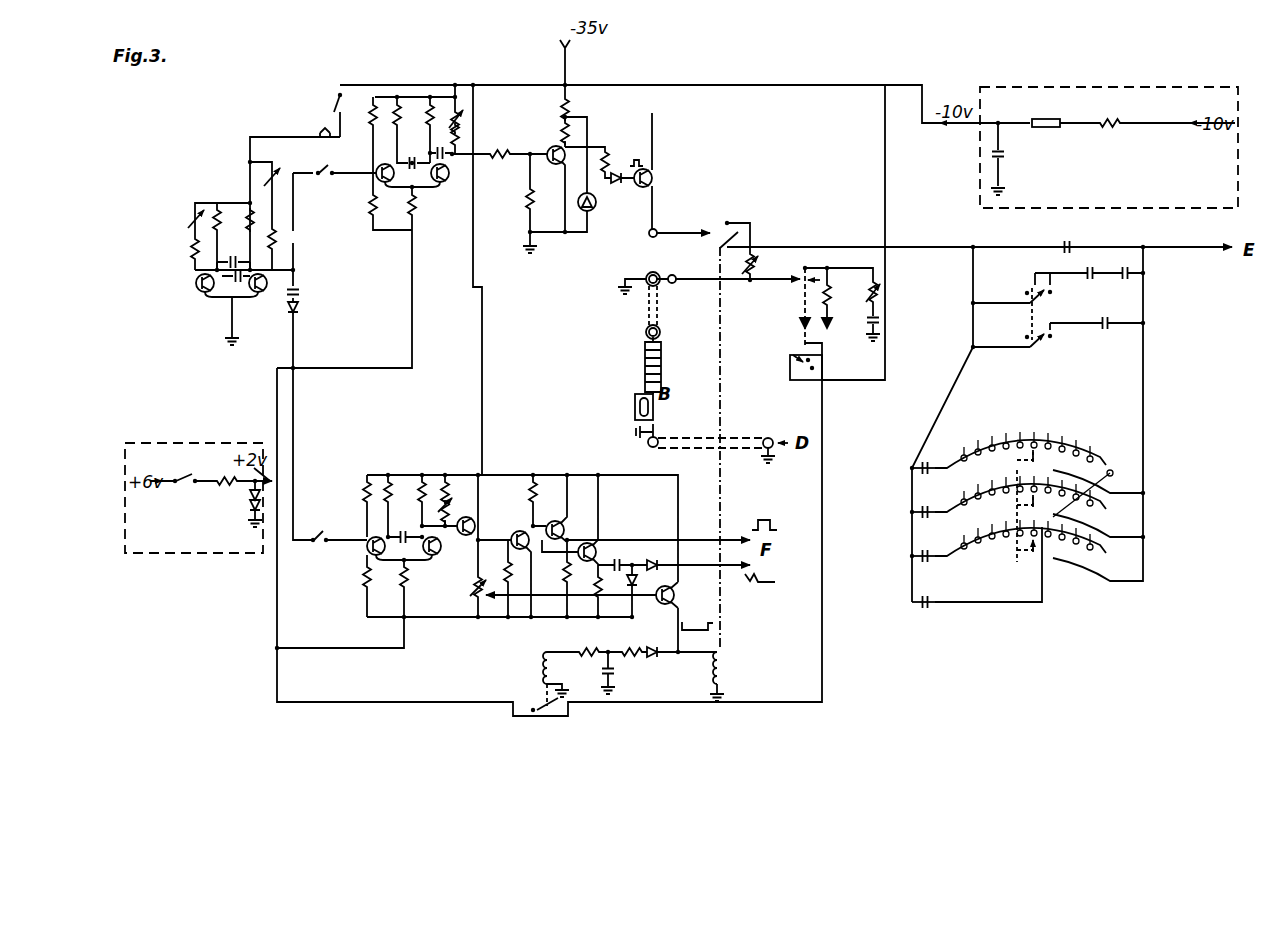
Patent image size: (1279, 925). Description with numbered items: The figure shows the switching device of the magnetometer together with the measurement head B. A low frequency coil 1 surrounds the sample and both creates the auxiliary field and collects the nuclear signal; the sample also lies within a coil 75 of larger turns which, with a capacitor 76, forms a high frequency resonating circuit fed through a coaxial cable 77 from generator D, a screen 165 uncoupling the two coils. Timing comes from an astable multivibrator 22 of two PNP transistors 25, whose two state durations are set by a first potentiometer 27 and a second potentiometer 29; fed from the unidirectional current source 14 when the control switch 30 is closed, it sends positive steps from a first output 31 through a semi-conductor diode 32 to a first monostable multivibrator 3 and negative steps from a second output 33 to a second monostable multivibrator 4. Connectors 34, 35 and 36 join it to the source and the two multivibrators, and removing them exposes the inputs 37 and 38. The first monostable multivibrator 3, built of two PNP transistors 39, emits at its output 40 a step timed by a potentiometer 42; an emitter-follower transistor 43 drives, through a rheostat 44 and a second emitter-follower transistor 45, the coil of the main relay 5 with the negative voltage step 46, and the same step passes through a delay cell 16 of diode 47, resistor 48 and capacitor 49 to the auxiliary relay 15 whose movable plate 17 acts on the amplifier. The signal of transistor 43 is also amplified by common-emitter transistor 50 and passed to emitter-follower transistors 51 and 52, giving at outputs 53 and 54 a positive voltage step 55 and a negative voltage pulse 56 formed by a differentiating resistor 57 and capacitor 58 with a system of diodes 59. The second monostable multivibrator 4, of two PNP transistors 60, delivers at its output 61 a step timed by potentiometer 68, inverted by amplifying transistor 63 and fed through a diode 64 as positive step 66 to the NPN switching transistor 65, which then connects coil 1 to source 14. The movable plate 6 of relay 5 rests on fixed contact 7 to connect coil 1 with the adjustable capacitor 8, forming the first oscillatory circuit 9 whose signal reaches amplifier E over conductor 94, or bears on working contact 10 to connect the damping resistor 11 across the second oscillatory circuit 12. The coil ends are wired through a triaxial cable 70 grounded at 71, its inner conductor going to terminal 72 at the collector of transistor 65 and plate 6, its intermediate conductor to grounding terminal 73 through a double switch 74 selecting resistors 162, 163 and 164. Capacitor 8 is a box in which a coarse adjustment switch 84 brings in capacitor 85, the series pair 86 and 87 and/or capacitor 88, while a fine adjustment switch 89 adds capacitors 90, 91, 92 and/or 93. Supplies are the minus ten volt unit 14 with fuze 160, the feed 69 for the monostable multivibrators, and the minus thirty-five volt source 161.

The low frequency coil 1 is at (640, 366).
The first monostable multivibrator 3 is at (404, 545).
The second monostable multivibrator 4 is at (412, 175).
The main relay 5 is at (724, 662).
The movable plate 6 is at (684, 273).
The fixed contact of rest 7 is at (729, 240).
The adjustable capacitor 8 is at (1075, 388).
The first oscillatory circuit 9 is at (937, 292).
The working fixed contact 10 is at (730, 222).
The adjustable damping resistor 11 is at (756, 266).
The second oscillatory circuit 12 is at (697, 274).
The unidirectional current source 14 is at (1104, 86).
The auxiliary relay 15 is at (540, 666).
The delay cell 16 is at (632, 656).
The movable plate 17 is at (530, 704).
The astable multivibrator 22 is at (231, 297).
The PNP transistors 25 is at (202, 294).
The first potentiometer 27 is at (196, 216).
The second potentiometer 29 is at (278, 170).
The control switch 30 is at (337, 104).
The first output 31 is at (312, 542).
The semi-conductor diode 32 is at (300, 307).
The second output 33 is at (319, 176).
The connector 34 is at (327, 132).
The connector 35 is at (315, 530).
The connector 36 is at (331, 170).
The input 37 is at (330, 542).
The input 38 is at (335, 176).
The PNP transistors 39 is at (376, 562).
The output 40 is at (440, 522).
The potentiometer 42 is at (449, 519).
The PNP transistor 43 is at (466, 535).
The rheostat 44 is at (471, 592).
The PNP transistor 45 is at (661, 604).
The voltage step 46 is at (700, 613).
The diode 47 is at (651, 658).
The resistor 48 is at (628, 650).
The capacitor 49 is at (612, 675).
The PNP transistor 50 is at (520, 530).
The transistor 51 is at (555, 520).
The transistor 52 is at (588, 542).
The output 53 is at (722, 538).
The output 54 is at (726, 565).
The positive voltage step 55 is at (760, 519).
The negative voltage pulse 56 is at (761, 587).
The resistor 57 is at (585, 583).
The capacitor 58 is at (616, 563).
The system of diodes 59 is at (639, 580).
The PNP transistors 60 is at (388, 187).
The output 61 is at (430, 165).
The amplifying transistor 63 is at (556, 145).
The diode 64 is at (619, 170).
The NPN transistor 65 is at (637, 186).
The amplified step 66 is at (650, 168).
The potentiometer 68 is at (465, 128).
The feed 69 is at (192, 447).
The triaxial cable 70 is at (662, 299).
The ground 71 is at (646, 272).
The terminal 72 is at (658, 230).
The grounding terminal 73 is at (672, 274).
The double switch 74 is at (800, 313).
The coil 75 is at (654, 408).
The capacitor 76 is at (650, 432).
The coaxial cable 77 is at (738, 440).
The coarse adjustment switch 84 is at (1030, 314).
The capacitor 85 is at (1066, 246).
The capacitor 86 is at (1087, 286).
The capacitor 87 is at (1129, 288).
The capacitor 88 is at (1103, 331).
The fine adjustment switch 89 is at (1013, 508).
The capacitor 90 is at (935, 465).
The capacitor 91 is at (937, 508).
The capacitor 92 is at (937, 552).
The capacitor 93 is at (940, 600).
The conductor 94 is at (1183, 252).
The fuze 160 is at (1040, 122).
The feed source 161 is at (570, 48).
The resistor 162 is at (800, 320).
The resistor 163 is at (831, 305).
The resistor 164 is at (869, 291).
The screen 165 is at (635, 410).